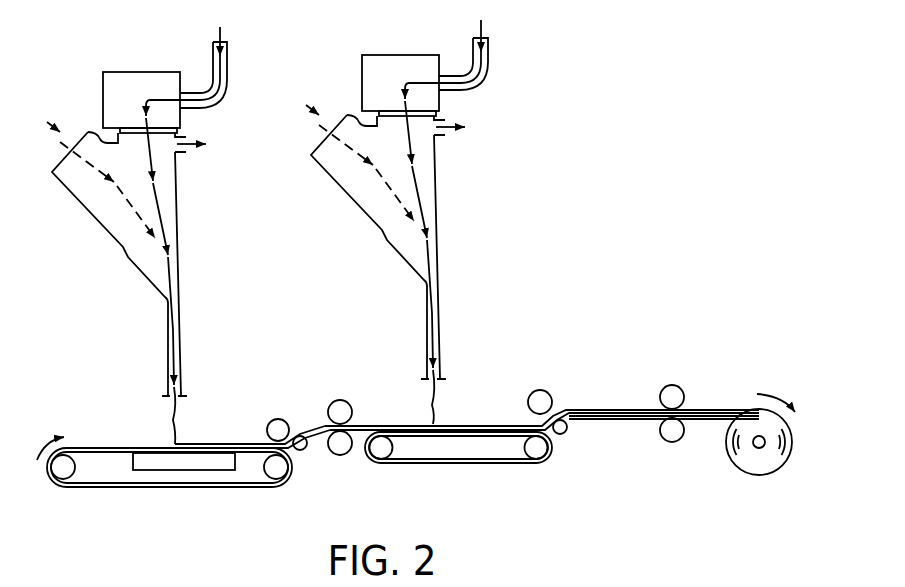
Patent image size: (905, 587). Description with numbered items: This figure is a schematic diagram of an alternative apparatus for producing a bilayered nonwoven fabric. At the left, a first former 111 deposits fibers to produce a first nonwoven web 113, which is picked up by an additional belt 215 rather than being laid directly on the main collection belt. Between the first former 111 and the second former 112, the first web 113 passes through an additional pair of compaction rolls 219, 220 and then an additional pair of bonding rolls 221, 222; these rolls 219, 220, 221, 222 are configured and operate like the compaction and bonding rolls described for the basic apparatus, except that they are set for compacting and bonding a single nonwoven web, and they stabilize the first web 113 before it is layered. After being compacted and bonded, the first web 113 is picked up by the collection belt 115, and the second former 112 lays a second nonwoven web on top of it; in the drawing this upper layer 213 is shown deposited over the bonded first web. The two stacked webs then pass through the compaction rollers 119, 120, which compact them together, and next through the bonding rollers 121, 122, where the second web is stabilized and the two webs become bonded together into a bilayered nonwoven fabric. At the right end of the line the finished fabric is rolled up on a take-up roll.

The first former 111 is at (189, 220).
The second former 112 is at (449, 217).
The first nonwoven web 113 is at (230, 440).
The collection belt 115 is at (470, 464).
The compaction roller 119 is at (544, 393).
The compaction roller 120 is at (565, 432).
The bonding roller 121 is at (675, 388).
The bonding roller 122 is at (672, 436).
The second fibrous layer 213 is at (481, 418).
The additional belt 215 is at (222, 488).
The compaction roll 219 is at (279, 416).
The compaction roll 220 is at (302, 451).
The bonding roll 221 is at (343, 404).
The bonding roll 222 is at (345, 454).